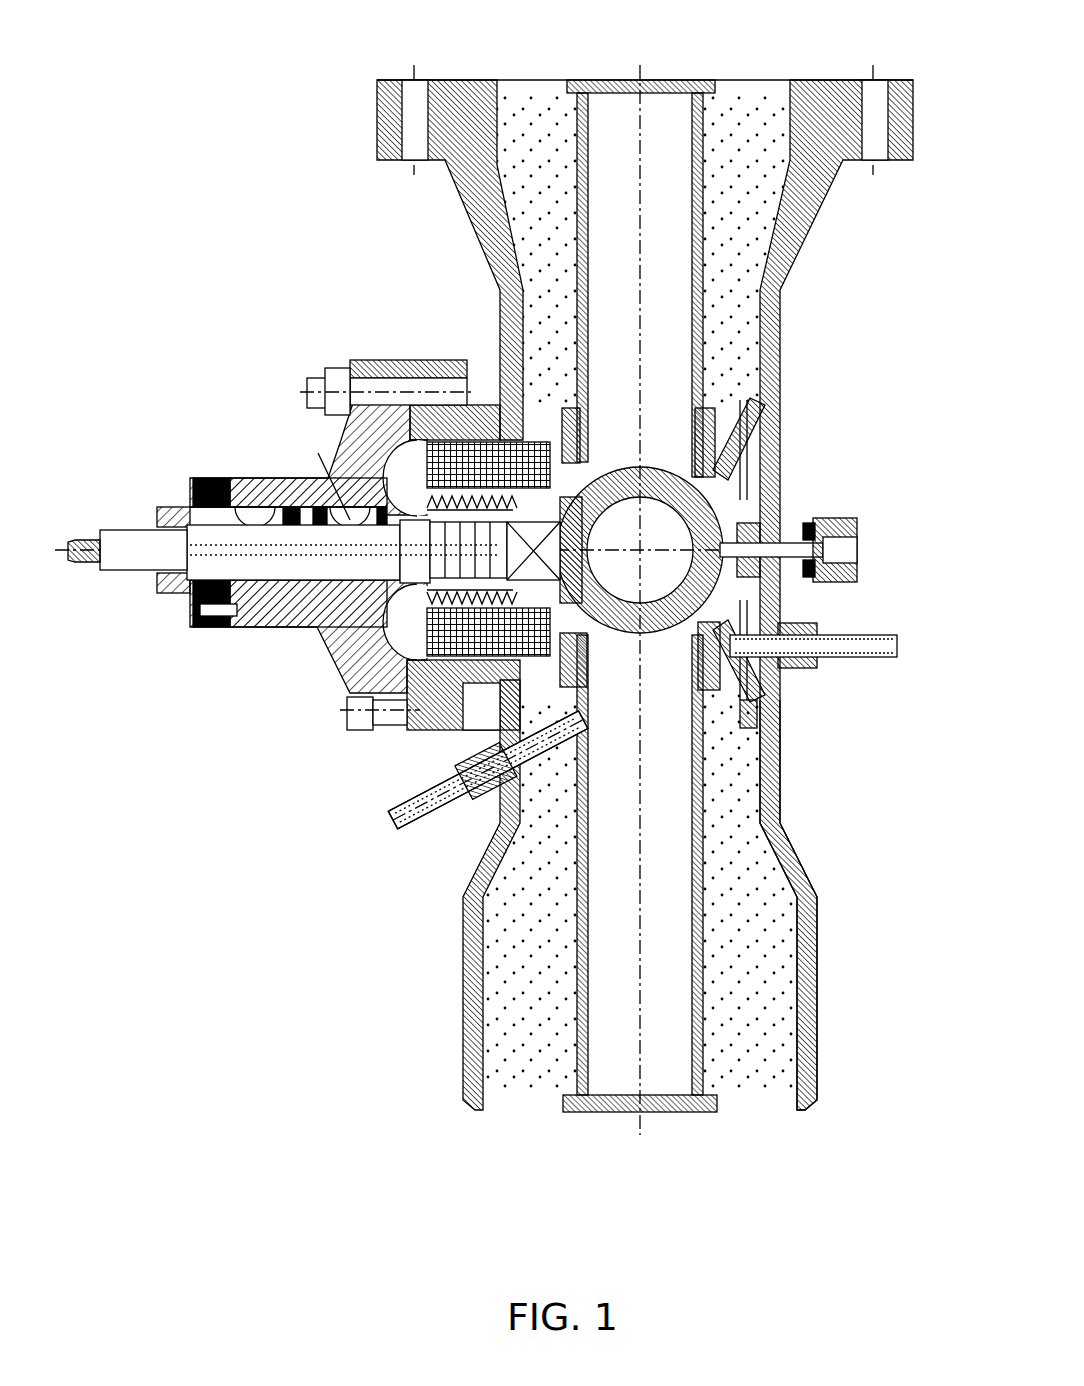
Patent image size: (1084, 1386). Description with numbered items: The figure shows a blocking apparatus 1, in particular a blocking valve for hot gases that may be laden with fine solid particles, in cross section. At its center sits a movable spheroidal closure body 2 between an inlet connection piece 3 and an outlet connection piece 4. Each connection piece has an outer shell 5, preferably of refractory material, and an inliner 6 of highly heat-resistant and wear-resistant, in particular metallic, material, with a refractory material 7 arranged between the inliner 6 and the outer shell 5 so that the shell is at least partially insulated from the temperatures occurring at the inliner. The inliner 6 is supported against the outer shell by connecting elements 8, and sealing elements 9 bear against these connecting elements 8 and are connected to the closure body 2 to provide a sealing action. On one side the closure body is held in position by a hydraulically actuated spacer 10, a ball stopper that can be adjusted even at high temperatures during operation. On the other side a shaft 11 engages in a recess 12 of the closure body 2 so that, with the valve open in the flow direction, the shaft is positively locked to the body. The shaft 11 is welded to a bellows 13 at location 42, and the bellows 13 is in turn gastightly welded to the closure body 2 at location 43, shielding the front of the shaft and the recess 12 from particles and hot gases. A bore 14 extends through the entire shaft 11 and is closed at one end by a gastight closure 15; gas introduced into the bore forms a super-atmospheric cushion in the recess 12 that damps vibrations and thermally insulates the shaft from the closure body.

The blocking apparatus 1 is at (190, 385).
The closure body 2 is at (720, 503).
The inlet connection piece 3 is at (440, 972).
The outlet connection piece 4 is at (853, 237).
The outer shell 5 is at (780, 340).
The inliner 6 is at (700, 112).
The refractory material 7 is at (540, 225).
The connecting elements 8 is at (775, 723).
The sealing elements 9 is at (707, 610).
The spacer 10 is at (857, 522).
The shaft 11 is at (380, 567).
The recess 12 is at (425, 410).
The bellows 13 is at (418, 652).
The bore 14 is at (157, 548).
The gastight closure 15 is at (100, 557).
The location 42 is at (353, 653).
The location 43 is at (413, 727).